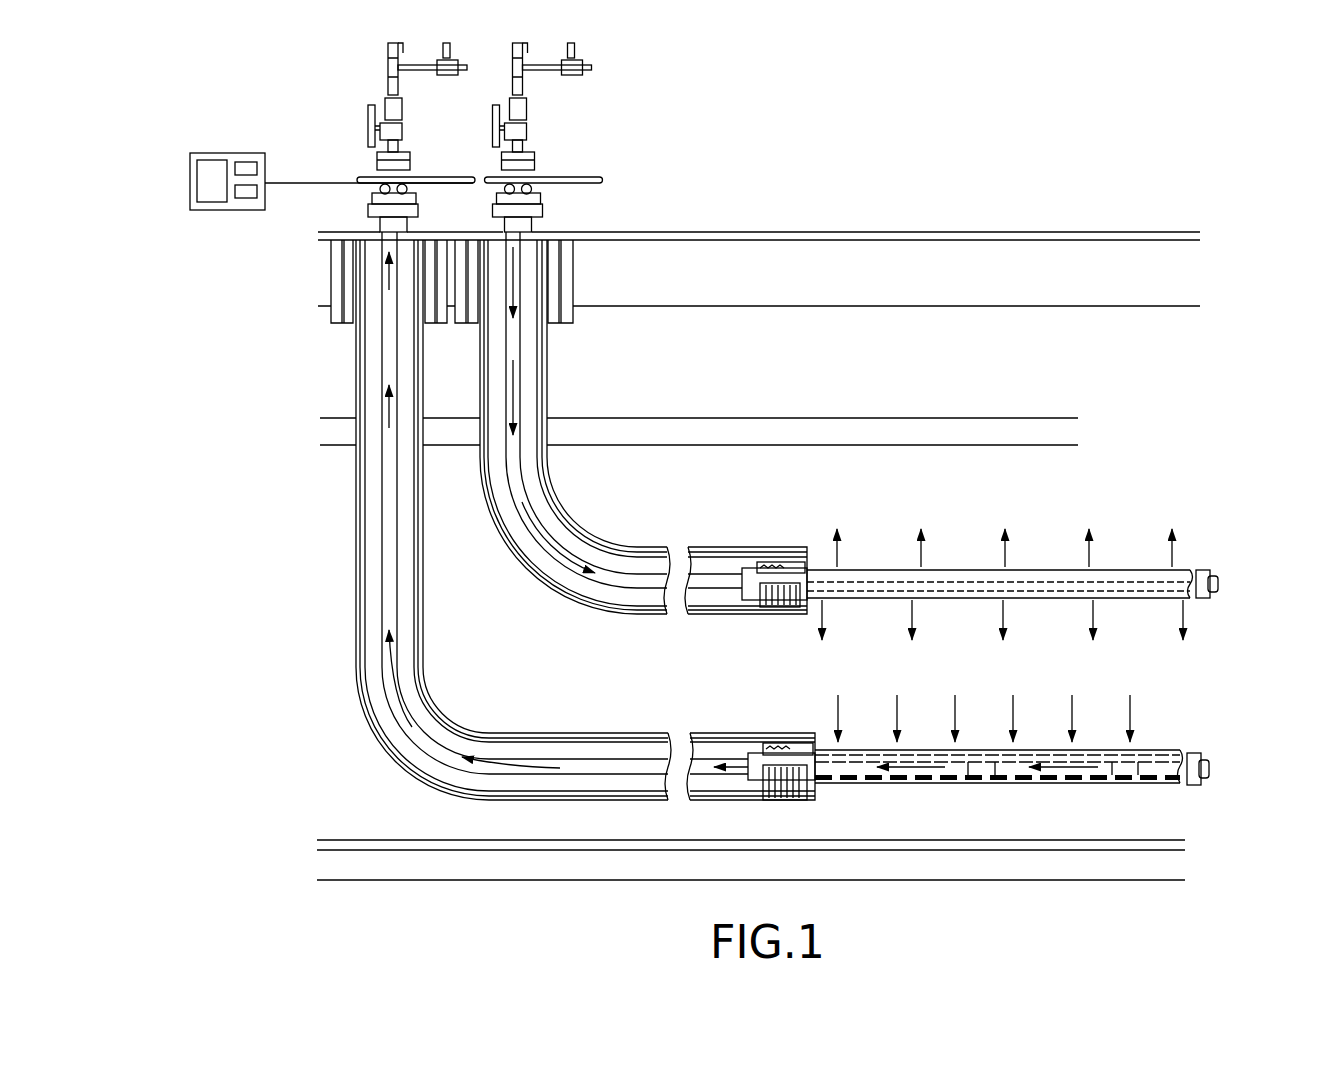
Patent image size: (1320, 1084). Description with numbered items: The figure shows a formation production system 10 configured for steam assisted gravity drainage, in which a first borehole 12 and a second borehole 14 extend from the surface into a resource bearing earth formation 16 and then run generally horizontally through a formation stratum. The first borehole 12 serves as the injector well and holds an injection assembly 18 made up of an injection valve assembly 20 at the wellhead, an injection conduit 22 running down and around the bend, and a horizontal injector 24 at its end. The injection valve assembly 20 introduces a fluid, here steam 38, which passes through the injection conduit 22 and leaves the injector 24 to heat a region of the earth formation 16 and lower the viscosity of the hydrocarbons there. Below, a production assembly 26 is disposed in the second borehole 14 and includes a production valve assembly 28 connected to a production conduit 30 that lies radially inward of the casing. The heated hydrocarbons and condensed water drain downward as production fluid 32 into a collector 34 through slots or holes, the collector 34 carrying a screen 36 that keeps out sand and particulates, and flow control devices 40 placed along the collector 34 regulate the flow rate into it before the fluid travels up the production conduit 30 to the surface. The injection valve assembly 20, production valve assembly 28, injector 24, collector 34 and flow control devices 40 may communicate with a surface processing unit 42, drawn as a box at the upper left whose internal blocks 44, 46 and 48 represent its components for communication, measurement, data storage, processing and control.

The formation production system 10 is at (737, 163).
The first borehole 12 is at (532, 250).
The second borehole 14 is at (370, 357).
The earth formation 16 is at (832, 445).
The injection assembly 18 is at (631, 423).
The injection valve assembly 20 is at (553, 148).
The injection conduit 22 is at (513, 464).
The injector 24 is at (1197, 570).
The production assembly 26 is at (546, 531).
The production valve assembly 28 is at (347, 152).
The production conduit 30 is at (385, 571).
The production fluid 32 is at (838, 698).
The collector 34 is at (1190, 750).
The screen 36 is at (1024, 753).
The steam 38 is at (1023, 549).
The flow control devices 40 is at (980, 770).
The surface processing unit 42 is at (319, 174).
The processor 44 is at (248, 197).
The memory 46 is at (246, 165).
The display 48 is at (212, 195).